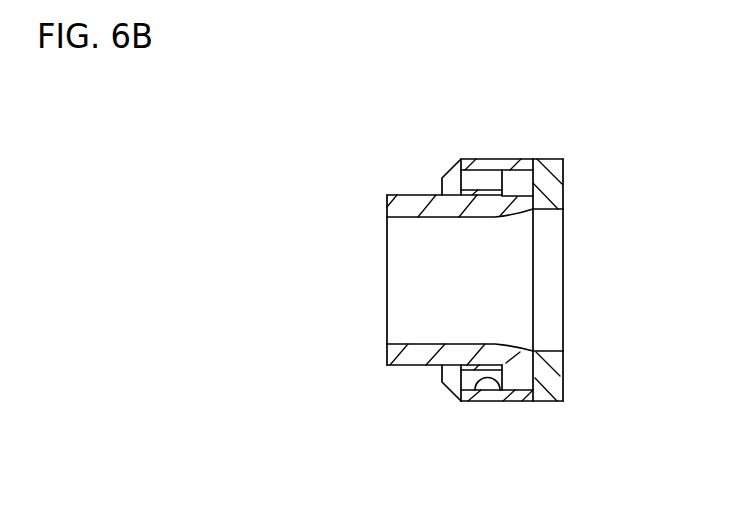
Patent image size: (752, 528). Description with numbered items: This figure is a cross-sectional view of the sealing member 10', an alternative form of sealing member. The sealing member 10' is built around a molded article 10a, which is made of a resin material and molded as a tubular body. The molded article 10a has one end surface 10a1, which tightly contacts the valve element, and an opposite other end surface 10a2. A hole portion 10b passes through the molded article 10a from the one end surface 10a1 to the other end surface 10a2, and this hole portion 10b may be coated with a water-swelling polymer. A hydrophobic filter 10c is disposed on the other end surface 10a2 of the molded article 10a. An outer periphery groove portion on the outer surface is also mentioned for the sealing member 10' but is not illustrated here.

The sealing member 10' is at (425, 209).
The molded article 10a is at (485, 157).
The one end surface 10a1 is at (450, 396).
The other end surface 10a2 is at (541, 402).
The hole portion 10b is at (497, 383).
The hydrophobic filter 10c is at (547, 183).